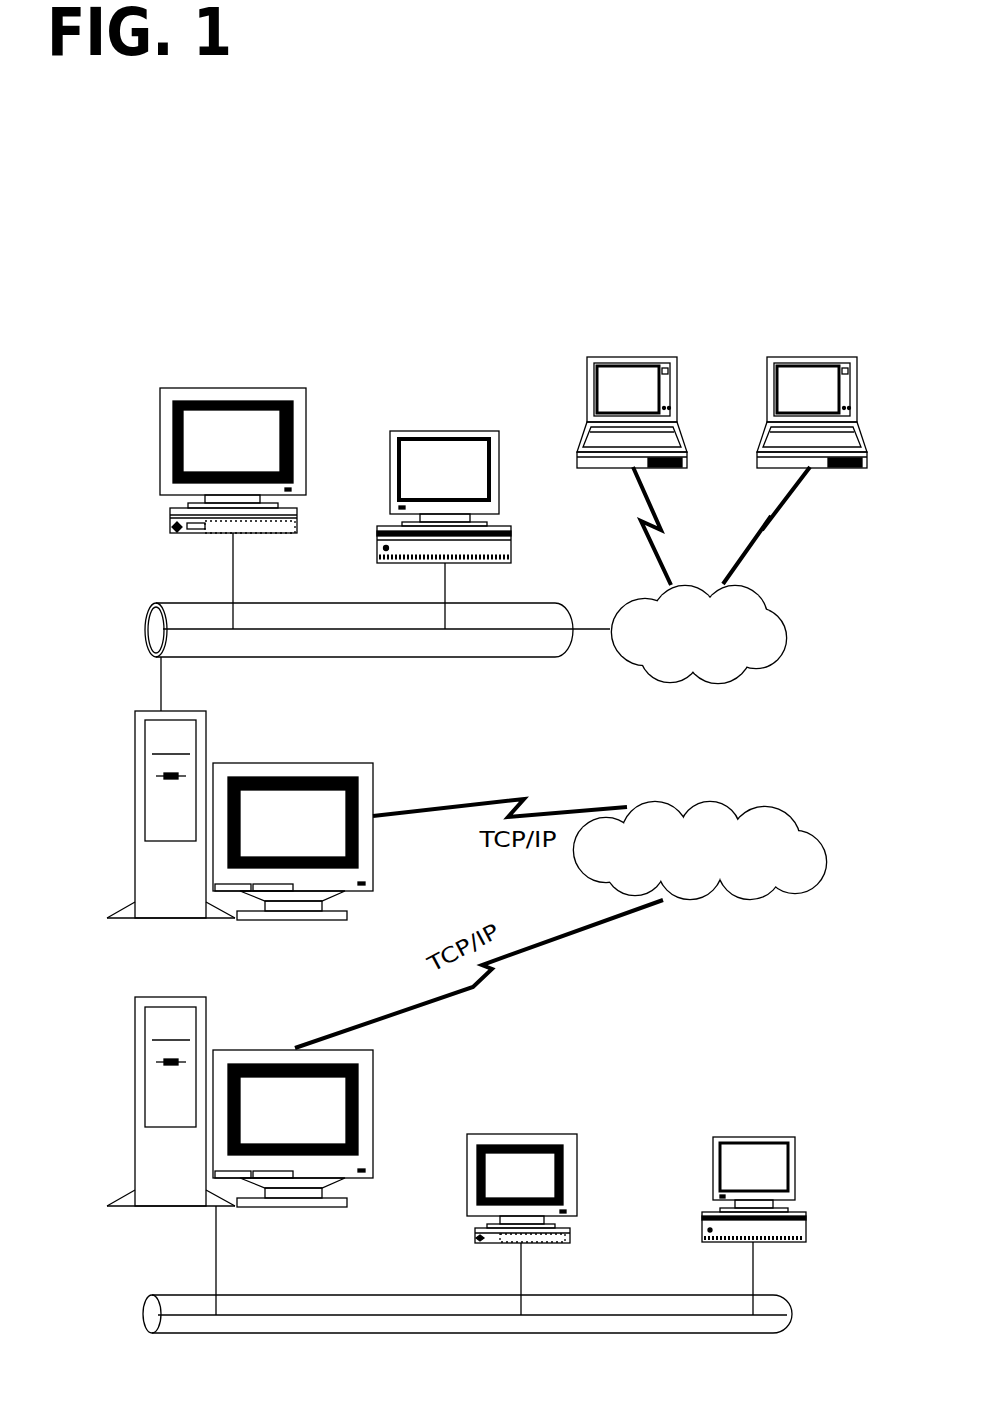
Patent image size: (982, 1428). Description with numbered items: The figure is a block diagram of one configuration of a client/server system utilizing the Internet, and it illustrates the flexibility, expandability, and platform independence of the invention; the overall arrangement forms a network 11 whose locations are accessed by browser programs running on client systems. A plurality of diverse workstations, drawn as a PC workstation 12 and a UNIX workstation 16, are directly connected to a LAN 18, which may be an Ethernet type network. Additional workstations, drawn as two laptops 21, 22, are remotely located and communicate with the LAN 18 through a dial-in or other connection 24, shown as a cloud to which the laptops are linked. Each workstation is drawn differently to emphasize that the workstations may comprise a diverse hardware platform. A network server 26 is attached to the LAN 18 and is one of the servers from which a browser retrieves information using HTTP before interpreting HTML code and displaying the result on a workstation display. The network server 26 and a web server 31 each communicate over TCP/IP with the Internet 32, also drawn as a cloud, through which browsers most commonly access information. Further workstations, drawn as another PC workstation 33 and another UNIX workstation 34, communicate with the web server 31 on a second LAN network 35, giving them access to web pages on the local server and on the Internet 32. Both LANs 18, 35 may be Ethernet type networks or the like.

The network 11 is at (580, 250).
The workstation 12 is at (160, 459).
The workstation 16 is at (511, 530).
The LAN 18 is at (397, 651).
The workstation 21 is at (677, 412).
The workstation 22 is at (767, 413).
The dial-in connection 24 is at (672, 683).
The network server 26 is at (210, 701).
The web server 31 is at (224, 1028).
The Internet 32 is at (737, 800).
The workstation 33 is at (577, 1170).
The workstation 34 is at (712, 1192).
The LAN network 35 is at (712, 1295).